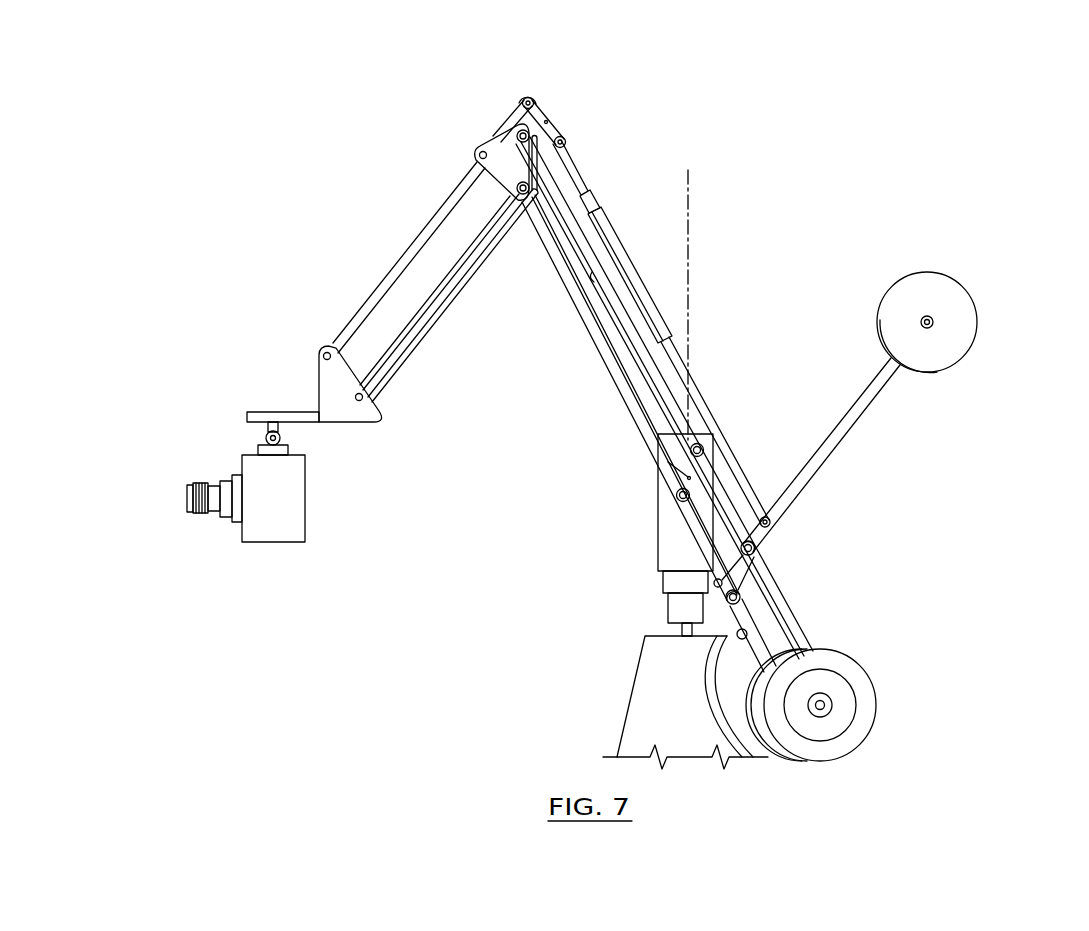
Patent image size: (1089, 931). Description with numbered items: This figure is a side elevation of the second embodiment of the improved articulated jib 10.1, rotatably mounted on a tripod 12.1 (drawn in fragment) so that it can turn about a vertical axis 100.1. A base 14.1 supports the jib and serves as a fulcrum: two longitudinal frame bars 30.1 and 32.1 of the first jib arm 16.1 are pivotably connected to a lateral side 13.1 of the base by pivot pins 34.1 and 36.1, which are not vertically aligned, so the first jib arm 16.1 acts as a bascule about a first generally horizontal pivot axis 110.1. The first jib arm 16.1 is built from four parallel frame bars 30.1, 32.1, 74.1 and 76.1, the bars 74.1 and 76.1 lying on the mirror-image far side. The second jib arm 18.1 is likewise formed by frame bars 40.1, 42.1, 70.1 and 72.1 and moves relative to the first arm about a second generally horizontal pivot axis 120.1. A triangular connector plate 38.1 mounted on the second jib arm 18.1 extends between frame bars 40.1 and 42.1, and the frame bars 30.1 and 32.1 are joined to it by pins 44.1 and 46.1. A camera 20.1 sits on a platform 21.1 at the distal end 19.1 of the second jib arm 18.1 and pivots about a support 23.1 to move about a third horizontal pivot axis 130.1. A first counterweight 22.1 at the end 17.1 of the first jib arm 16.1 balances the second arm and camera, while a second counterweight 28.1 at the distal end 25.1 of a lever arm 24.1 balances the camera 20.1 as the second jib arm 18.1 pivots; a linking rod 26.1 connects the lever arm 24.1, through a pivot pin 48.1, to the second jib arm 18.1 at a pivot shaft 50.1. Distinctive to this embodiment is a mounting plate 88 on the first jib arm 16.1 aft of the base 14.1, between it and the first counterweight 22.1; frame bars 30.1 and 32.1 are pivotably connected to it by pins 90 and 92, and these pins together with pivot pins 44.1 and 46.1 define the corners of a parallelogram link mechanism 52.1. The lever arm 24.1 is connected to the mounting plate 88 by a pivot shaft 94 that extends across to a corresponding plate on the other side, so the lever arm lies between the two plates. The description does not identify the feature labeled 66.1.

The articulated jib 10.1 is at (305, 95).
The tripod 12.1 is at (626, 700).
The lateral side 13.1 is at (673, 524).
The base 14.1 is at (670, 556).
The first jib arm 16.1 is at (643, 370).
The end 17.1 is at (798, 640).
The second jib arm 18.1 is at (425, 282).
The distal end 19.1 is at (376, 405).
The camera 20.1 is at (272, 532).
The platform 21.1 is at (274, 411).
The first counterweight 22.1 is at (863, 707).
The support 23.1 is at (266, 437).
The lever arm 24.1 is at (845, 440).
The distal end 25.1 is at (892, 375).
The linking rod 26.1 is at (606, 220).
The second counterweight 28.1 is at (960, 313).
The longitudinal frame bar 30.1 is at (768, 616).
The longitudinal frame bar 32.1 is at (584, 249).
The pivot pin 34.1 is at (676, 496).
The pivot pin 36.1 is at (702, 446).
The triangular connector plate 38.1 is at (508, 158).
The longitudinal frame bar 40.1 is at (410, 328).
The longitudinal frame bar 42.1 is at (402, 258).
The pivot pin 44.1 is at (545, 173).
The pivot pin 46.1 is at (526, 103).
The pivot pin 48.1 is at (771, 525).
The pivot shaft 50.1 is at (552, 120).
The parallelogram link mechanism 52.1 is at (606, 334).
The plate hole 66.1 is at (478, 155).
The longitudinal frame bar 70.1 is at (397, 363).
The longitudinal frame bar 72.1 is at (392, 287).
The longitudinal frame bar 74.1 is at (747, 645).
The longitudinal frame bar 76.1 is at (596, 284).
The mounting plate 88 is at (742, 580).
The pin 90 is at (740, 757).
The pin 92 is at (756, 549).
The pivot shaft 94 is at (702, 600).
The vertical axis 100.1 is at (689, 186).
The first generally horizontal pivot axis 110.1 is at (688, 477).
The second generally horizontal pivot axis 120.1 is at (515, 191).
The third horizontal pivot axis 130.1 is at (281, 436).